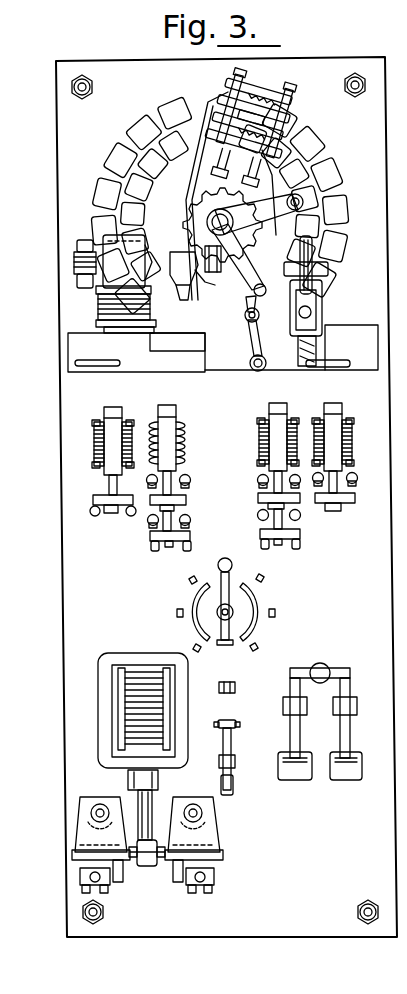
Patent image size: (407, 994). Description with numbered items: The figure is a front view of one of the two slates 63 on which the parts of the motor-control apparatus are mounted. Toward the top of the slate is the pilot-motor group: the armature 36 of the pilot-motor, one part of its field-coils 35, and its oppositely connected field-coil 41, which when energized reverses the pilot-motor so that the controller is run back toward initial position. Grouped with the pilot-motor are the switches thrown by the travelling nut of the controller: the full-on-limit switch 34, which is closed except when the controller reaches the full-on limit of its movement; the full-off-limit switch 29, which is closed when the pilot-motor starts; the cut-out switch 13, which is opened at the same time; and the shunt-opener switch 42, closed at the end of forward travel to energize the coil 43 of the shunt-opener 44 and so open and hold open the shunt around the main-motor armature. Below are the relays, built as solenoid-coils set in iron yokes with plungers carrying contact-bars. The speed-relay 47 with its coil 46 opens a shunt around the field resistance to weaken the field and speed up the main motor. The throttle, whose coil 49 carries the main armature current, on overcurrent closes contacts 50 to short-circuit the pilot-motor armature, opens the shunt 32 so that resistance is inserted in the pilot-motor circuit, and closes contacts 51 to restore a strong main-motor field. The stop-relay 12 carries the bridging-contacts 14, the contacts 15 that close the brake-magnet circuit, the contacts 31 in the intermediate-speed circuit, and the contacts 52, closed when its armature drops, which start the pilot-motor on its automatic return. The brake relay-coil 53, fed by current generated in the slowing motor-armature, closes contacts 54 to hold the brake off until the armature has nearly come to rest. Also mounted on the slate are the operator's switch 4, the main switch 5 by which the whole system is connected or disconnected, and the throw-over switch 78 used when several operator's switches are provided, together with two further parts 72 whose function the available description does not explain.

The slate 63 is at (358, 57).
The shunt-opener switch 42 is at (252, 282).
The full-on-limit switch 34 is at (208, 271).
The cut-out switch 13 is at (182, 268).
The full-off-limit switch 29 is at (247, 333).
The armature of the pilot-motor 36 is at (78, 258).
The field-coils of the pilot-motor 35 is at (100, 299).
The field-coil of the pilot-motor 41 is at (100, 314).
The coil of the speed-relay 46 is at (96, 443).
The speed-relay 47 is at (109, 505).
The coil of the throttle 49 is at (184, 446).
The contacts 50 is at (191, 480).
The contacts 51 is at (191, 519).
The shunt 32 is at (191, 542).
The stop-relay 12 is at (264, 437).
The bridging-contacts 14 is at (262, 464).
The second pair of contacts 15 is at (262, 483).
The contacts of the stop-relay 31 is at (258, 515).
The contacts 52 is at (260, 540).
The brake relay-coil 53 is at (354, 440).
The contacts 54 is at (358, 479).
The operator's switch 4 is at (234, 567).
The coil of the shunt-opener 43 is at (115, 718).
The throw-over switch 78 is at (233, 738).
The main switch 5 is at (350, 682).
The shunt-opener 44 is at (122, 868).
The bracket 72 is at (82, 818).